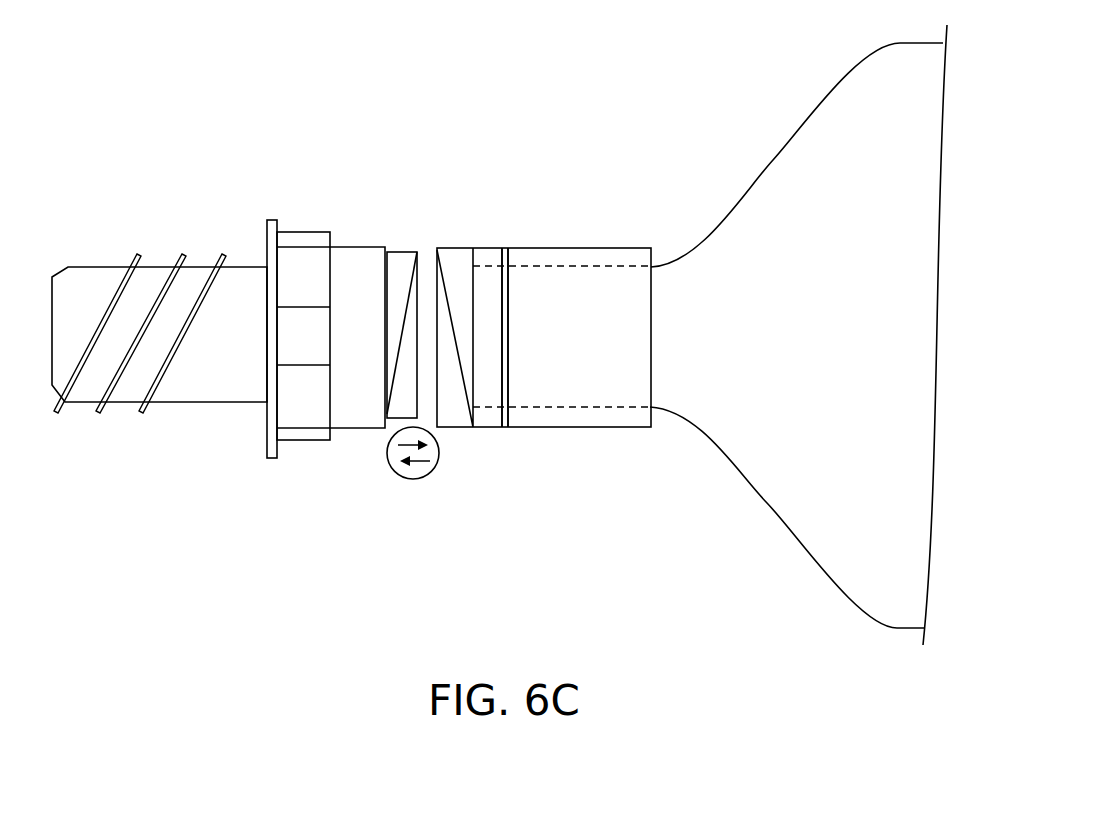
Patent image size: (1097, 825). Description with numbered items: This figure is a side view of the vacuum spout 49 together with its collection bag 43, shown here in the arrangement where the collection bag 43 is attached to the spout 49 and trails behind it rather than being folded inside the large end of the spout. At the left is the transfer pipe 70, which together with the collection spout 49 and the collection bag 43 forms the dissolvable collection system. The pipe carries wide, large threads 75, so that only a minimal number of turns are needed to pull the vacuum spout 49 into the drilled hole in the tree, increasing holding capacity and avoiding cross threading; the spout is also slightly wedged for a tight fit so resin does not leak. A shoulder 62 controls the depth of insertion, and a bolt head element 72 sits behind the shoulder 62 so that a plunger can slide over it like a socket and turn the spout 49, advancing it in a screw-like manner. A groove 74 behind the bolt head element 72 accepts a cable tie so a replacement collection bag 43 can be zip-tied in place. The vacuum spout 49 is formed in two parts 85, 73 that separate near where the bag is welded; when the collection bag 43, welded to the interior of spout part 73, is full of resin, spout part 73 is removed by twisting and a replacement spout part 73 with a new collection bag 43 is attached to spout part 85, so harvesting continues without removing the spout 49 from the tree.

The vacuum spout 49 is at (244, 60).
The transfer pipe 70 is at (84, 245).
The threads 75 is at (138, 257).
The shoulder 62 is at (270, 453).
The bolt head element 72 is at (298, 258).
The spout part 85 is at (399, 226).
The spout part 73 is at (462, 226).
The groove 74 is at (508, 393).
The collection bag 43 is at (767, 503).